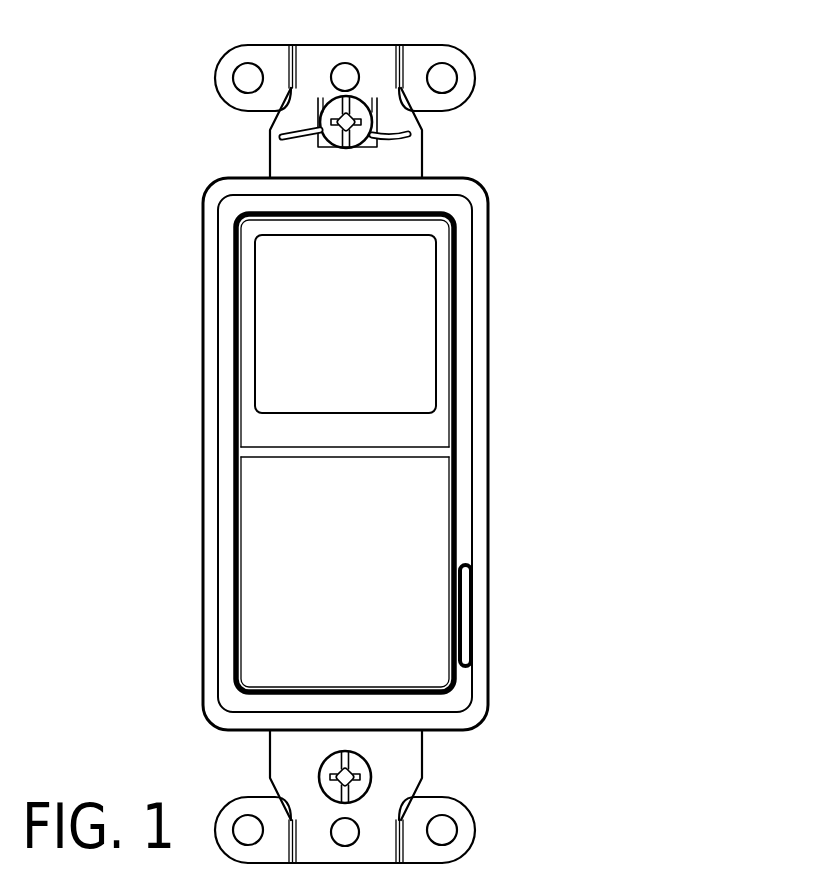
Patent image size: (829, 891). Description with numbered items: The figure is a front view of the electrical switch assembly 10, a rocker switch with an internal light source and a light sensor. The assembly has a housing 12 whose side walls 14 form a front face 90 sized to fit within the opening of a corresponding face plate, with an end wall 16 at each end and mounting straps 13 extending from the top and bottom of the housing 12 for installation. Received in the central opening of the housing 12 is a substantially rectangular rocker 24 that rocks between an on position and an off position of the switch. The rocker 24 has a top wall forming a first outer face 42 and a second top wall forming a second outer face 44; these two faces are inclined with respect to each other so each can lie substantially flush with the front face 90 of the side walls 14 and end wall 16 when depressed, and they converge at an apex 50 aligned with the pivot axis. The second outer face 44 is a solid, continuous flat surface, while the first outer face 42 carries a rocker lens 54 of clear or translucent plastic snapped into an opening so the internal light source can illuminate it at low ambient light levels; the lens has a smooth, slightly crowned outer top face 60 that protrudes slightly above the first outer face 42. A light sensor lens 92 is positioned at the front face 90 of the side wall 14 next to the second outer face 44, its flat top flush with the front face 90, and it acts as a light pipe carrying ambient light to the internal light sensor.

The electrical switch assembly 10 is at (162, 293).
The housing 12 is at (488, 713).
The mounting straps 13 is at (475, 90).
The side walls 14 is at (490, 468).
The end wall 16 is at (437, 178).
The rocker 24 is at (458, 523).
The first outer face 42 is at (263, 433).
The second outer face 44 is at (263, 557).
The apex 50 is at (257, 452).
The rocker lens 54 is at (437, 340).
The outer top face 60 is at (415, 295).
The front face 90 is at (482, 412).
The light sensor lens 92 is at (475, 600).